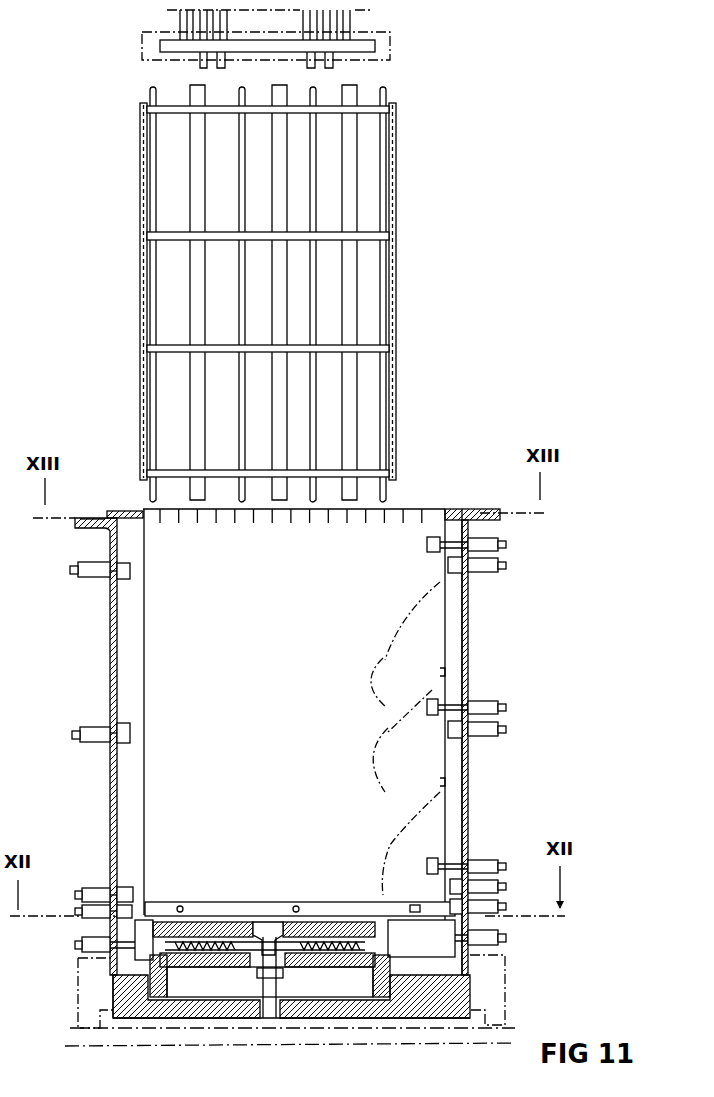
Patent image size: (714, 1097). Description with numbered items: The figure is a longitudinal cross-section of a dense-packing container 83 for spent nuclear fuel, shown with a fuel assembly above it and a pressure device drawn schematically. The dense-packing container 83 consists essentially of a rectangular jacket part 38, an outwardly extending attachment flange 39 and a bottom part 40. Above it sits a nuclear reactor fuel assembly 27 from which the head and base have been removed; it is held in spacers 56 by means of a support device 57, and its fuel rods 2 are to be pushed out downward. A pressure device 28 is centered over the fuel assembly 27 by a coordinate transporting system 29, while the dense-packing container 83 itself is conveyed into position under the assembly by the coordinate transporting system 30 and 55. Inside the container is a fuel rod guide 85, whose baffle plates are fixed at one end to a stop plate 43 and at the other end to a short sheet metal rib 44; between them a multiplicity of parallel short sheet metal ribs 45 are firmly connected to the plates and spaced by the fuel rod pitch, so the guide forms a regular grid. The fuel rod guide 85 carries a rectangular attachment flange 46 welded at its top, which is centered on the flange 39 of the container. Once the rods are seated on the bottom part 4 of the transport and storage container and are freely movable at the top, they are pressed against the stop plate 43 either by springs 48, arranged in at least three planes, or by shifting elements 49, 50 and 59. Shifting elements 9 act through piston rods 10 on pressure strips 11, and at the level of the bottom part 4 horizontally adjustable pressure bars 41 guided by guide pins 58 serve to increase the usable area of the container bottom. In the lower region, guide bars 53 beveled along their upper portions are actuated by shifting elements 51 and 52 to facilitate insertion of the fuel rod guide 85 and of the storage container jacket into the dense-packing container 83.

The pressure device 28 is at (363, 10).
The coordinate transporting system 29 is at (390, 47).
The nuclear reactor fuel assembly 27 is at (285, 293).
The support device 57 is at (397, 152).
The spacers 56 is at (372, 348).
The fuel rods 2 is at (157, 272).
The attachment flange 46 is at (120, 511).
The attachment flange 39 is at (80, 521).
The short sheet metal ribs 45 is at (180, 523).
The short sheet metal rib 44 is at (443, 522).
The fuel rod guide 85 is at (136, 597).
The stop plate 43 is at (146, 603).
The jacket part 38 is at (112, 650).
The dense-packing container 83 is at (103, 671).
The shifting elements 9 is at (97, 727).
The pressure strips 11 is at (127, 723).
The piston rods 10 is at (117, 745).
The shifting element 50 is at (455, 702).
The shifting element 49 is at (487, 704).
The springs 48 is at (386, 855).
The shifting element 59 is at (431, 716).
The shifting element 52 is at (118, 884).
The shifting element 51 is at (95, 888).
The guide bars 53 is at (128, 887).
The pressure bars 41 is at (148, 922).
The guide pins 58 is at (76, 944).
The coordinate transporting system 55 is at (78, 988).
The bottom part 4 is at (160, 985).
The coordinate transporting system 30 is at (106, 1042).
The bottom part 40 is at (178, 1012).